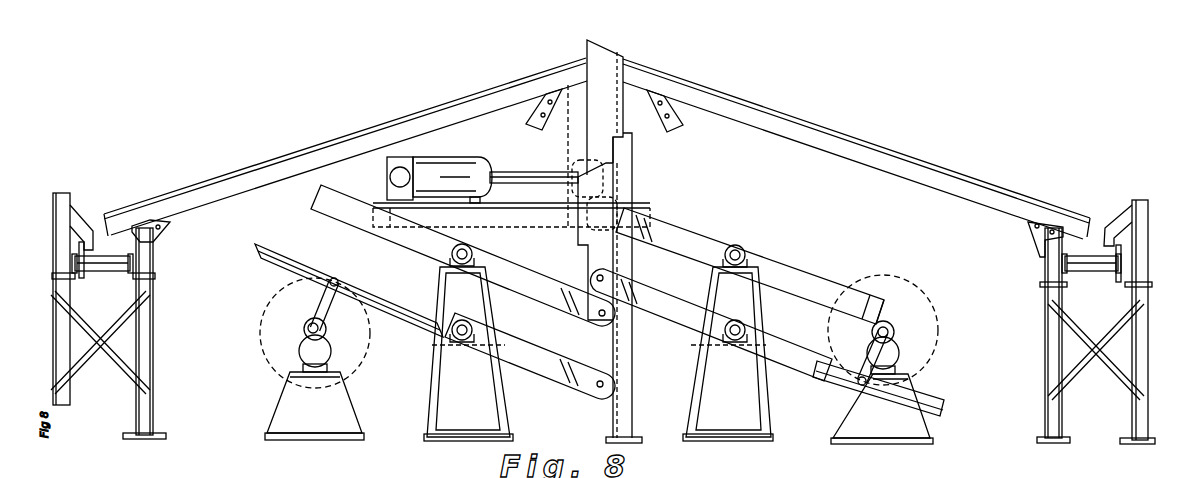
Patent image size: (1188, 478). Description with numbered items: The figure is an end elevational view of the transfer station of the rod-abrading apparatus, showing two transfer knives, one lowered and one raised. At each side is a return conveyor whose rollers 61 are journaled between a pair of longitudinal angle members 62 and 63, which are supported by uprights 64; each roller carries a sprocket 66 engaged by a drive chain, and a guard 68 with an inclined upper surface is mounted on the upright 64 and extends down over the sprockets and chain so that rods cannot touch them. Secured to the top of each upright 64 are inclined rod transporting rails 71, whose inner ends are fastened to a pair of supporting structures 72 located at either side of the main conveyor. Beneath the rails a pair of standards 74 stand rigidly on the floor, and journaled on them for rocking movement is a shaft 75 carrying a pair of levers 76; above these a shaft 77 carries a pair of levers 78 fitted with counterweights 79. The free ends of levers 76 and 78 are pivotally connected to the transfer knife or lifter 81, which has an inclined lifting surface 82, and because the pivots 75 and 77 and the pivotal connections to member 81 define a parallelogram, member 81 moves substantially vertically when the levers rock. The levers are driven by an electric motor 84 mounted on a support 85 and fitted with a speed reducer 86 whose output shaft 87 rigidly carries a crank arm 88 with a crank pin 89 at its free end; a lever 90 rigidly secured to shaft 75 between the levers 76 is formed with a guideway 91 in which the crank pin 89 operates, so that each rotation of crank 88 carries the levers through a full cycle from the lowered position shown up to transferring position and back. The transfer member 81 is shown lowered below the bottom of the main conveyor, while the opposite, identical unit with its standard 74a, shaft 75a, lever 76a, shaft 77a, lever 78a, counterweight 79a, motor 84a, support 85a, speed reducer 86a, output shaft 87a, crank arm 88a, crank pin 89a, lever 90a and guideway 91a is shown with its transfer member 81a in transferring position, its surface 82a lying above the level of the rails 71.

The roller 61 is at (120, 263).
The longitudinal angle member 62 is at (147, 264).
The longitudinal angle member 63 is at (73, 271).
The upright 64 is at (145, 367).
The sprocket 66 is at (85, 278).
The guard 68 is at (1119, 216).
The inclined rod transporting rail 71 is at (287, 160).
The supporting structure 72 is at (562, 118).
The standard 74 is at (488, 418).
The standard 74a is at (779, 424).
The shaft 75 is at (462, 342).
The shaft 75a is at (733, 338).
The lever 76 is at (529, 345).
The lever 76a is at (804, 342).
The shaft 77 is at (462, 265).
The shaft 77a is at (736, 266).
The lever 78 is at (529, 273).
The lever 78a is at (694, 251).
The counterweight 79 is at (336, 202).
The counterweight 79a is at (830, 318).
The transfer knife 81 is at (578, 172).
The transfer knife 81a is at (625, 58).
The inclined lifting surface 82 is at (590, 160).
The inclined lifting surface 82a is at (600, 52).
The electric motor 84 is at (292, 350).
The electric motor 84a is at (907, 357).
The support 85 is at (282, 418).
The support 85a is at (925, 433).
The speed reducer 86 is at (298, 334).
The speed reducer 86a is at (900, 344).
The output shaft 87 is at (312, 325).
The output shaft 87a is at (884, 330).
The crank arm 88 is at (329, 317).
The crank arm 88a is at (868, 357).
The crank pin 89 is at (327, 281).
The crank pin 89a is at (860, 384).
The lever 90 is at (275, 252).
The lever 90a is at (935, 403).
The guideway 91 is at (305, 276).
The guideway 91a is at (821, 363).